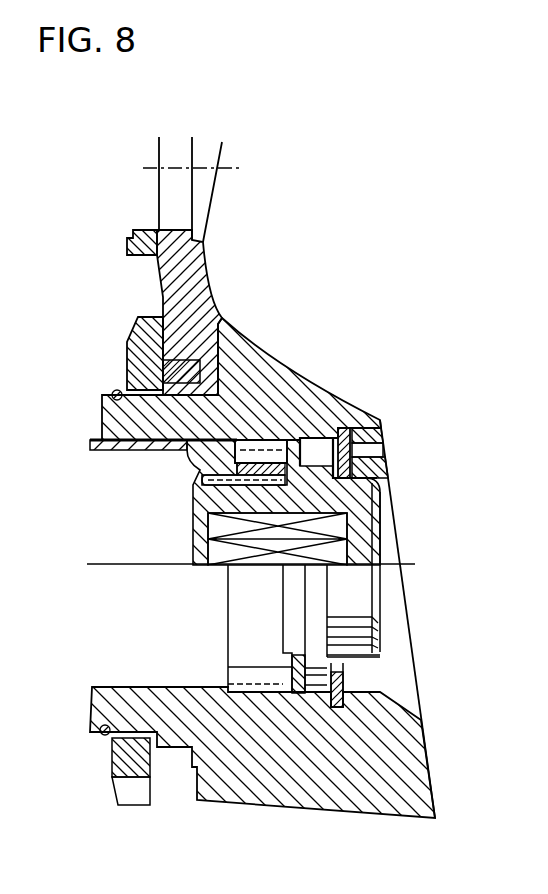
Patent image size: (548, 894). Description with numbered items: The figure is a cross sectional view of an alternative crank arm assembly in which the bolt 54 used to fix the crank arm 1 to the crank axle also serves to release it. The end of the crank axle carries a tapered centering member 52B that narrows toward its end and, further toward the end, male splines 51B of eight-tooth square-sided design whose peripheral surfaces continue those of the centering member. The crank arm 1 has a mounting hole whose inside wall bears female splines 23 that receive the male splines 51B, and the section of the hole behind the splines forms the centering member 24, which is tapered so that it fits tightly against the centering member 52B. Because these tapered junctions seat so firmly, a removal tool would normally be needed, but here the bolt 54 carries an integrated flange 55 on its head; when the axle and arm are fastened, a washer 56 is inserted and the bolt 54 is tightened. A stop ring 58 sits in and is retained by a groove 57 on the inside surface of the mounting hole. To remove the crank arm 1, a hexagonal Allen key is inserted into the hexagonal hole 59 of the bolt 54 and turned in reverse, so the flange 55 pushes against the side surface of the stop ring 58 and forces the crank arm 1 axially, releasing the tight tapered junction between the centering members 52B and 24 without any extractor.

The crank arm 1 is at (435, 752).
The female splines 23 is at (295, 447).
The centering member 24 is at (197, 440).
The male splines 51B is at (265, 453).
The centering member 52B is at (153, 430).
The bolt 54 is at (340, 497).
The flange 55 is at (323, 450).
The washer 56 is at (292, 670).
The groove 57 is at (352, 432).
The stop ring 58 is at (352, 457).
The hexagonal hole 59 is at (340, 558).